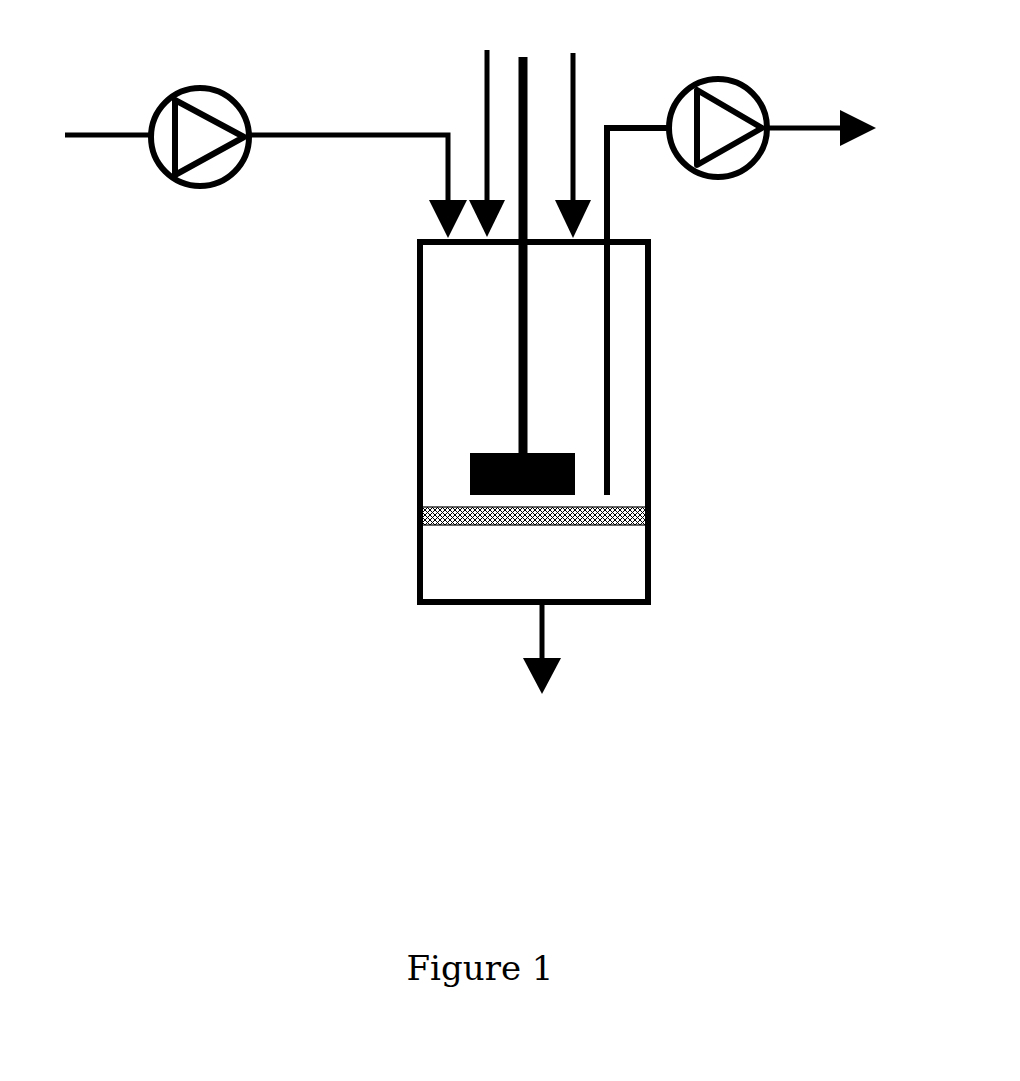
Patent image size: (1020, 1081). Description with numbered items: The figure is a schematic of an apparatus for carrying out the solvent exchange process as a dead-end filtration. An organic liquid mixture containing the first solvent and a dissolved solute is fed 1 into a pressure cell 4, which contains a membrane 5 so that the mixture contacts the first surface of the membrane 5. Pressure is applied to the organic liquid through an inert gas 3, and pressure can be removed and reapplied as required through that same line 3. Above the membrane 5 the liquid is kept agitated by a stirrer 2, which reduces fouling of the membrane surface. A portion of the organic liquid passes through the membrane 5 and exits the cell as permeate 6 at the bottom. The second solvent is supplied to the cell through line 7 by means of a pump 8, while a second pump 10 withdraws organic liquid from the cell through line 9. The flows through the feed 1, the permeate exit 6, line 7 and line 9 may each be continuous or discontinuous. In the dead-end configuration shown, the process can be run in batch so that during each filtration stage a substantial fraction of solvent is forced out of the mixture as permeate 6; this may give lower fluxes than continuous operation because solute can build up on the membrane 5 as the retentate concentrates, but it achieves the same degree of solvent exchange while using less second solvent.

The feed of organic liquid mixture 1 is at (475, 118).
The stirrer 2 is at (522, 247).
The inert gas line 3 is at (592, 134).
The pressure cell 4 is at (494, 422).
The membrane 5 is at (488, 517).
The permeate exit 6 is at (582, 653).
The second solvent feed line 7 is at (358, 155).
The pump 8 is at (157, 106).
The organic liquid removal line 9 is at (821, 107).
The second pump 10 is at (687, 258).